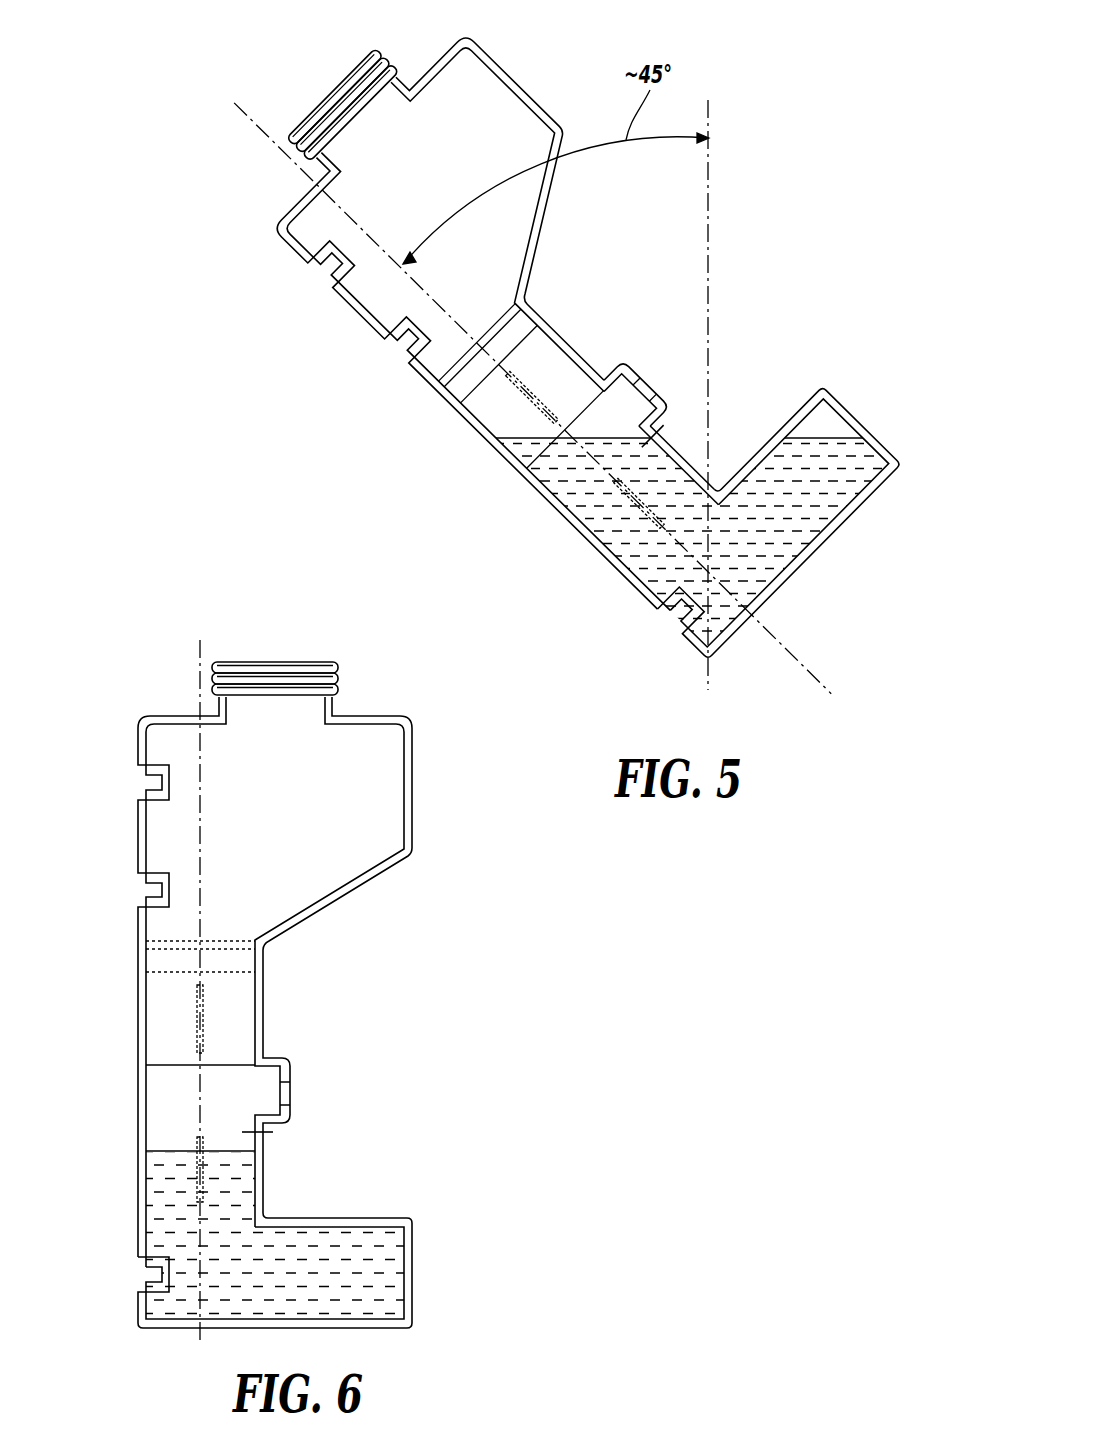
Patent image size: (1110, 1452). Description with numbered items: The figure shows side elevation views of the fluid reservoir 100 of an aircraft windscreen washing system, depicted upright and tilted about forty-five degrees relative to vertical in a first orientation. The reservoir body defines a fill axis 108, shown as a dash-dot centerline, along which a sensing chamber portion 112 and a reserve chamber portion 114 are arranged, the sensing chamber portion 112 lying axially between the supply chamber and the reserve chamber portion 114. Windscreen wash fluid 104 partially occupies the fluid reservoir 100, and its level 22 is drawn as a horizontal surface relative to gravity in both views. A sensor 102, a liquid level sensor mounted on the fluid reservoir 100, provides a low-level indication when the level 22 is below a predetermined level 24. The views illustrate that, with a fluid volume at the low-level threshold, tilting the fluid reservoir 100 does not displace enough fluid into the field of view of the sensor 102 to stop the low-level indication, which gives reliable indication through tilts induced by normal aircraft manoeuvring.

In FIG. 6, the fluid reservoir 100 is at (139, 1333).
In FIG. 5, the fluid reservoir 100 is at (578, 571).
In FIG. 5, the sensor 102 is at (662, 398).
In FIG. 6, the windscreen wash fluid 104 is at (350, 1268).
In FIG. 5, the windscreen wash fluid 104 is at (800, 523).
In FIG. 6, the fill axis 108 is at (200, 823).
In FIG. 5, the fill axis 108 is at (797, 682).
In FIG. 6, the sensing chamber portion 112 is at (175, 1100).
In FIG. 5, the sensing chamber portion 112 is at (578, 478).
In FIG. 6, the reserve chamber portion 114 is at (185, 1295).
In FIG. 5, the reserve chamber portion 114 is at (800, 457).
In FIG. 6, the level 22 is at (168, 1152).
In FIG. 5, the level 22 is at (524, 437).
In FIG. 6, the predetermined level 24 is at (260, 1135).
In FIG. 5, the predetermined level 24 is at (645, 437).